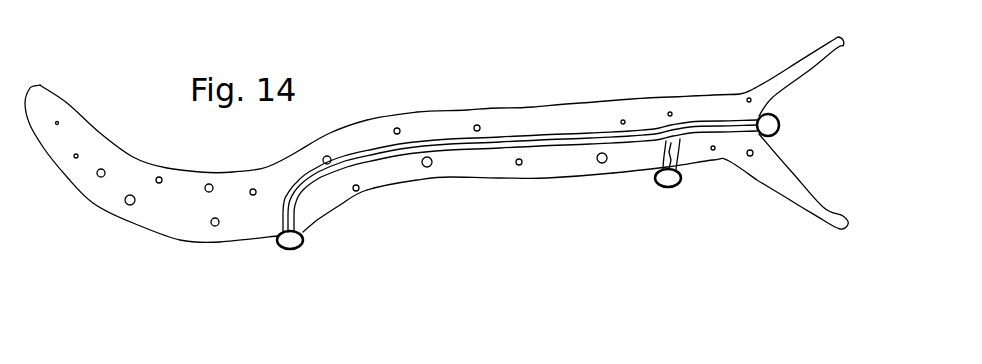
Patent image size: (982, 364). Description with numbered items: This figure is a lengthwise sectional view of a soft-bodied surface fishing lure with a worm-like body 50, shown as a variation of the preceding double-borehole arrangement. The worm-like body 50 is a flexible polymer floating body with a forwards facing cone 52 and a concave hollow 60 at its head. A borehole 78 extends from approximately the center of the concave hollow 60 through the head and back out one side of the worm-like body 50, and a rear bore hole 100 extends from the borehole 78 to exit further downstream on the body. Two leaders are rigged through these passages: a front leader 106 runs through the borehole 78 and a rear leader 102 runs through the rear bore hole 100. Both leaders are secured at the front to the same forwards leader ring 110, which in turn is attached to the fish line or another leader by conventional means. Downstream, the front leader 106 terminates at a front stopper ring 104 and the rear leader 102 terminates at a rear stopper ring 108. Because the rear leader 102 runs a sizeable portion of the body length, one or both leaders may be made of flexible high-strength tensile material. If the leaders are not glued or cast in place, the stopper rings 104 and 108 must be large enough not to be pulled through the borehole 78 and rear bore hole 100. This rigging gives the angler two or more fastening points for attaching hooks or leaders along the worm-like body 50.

The worm-like body 50 is at (85, 193).
The forwards facing cone 52 is at (842, 32).
The concave hollow 60 is at (815, 190).
The borehole 78 is at (683, 157).
The rear bore hole 100 is at (296, 211).
The rear leader 102 is at (533, 140).
The front stopper ring 104 is at (655, 176).
The front leader 106 is at (727, 158).
The rear stopper ring 108 is at (293, 250).
The forwards leader ring 110 is at (775, 115).